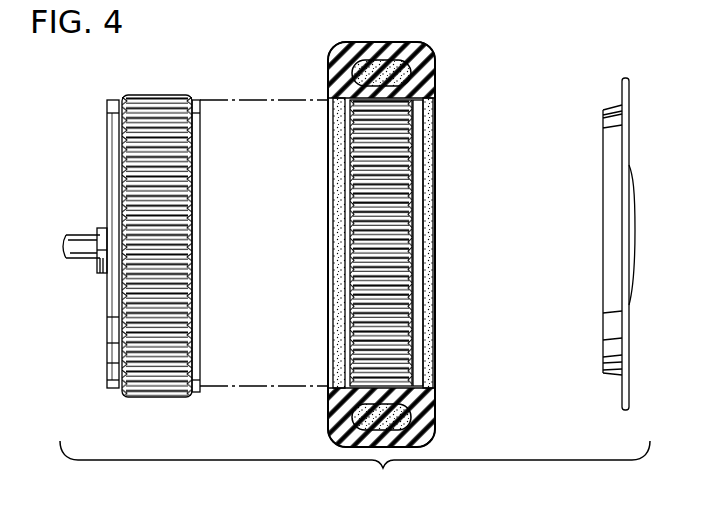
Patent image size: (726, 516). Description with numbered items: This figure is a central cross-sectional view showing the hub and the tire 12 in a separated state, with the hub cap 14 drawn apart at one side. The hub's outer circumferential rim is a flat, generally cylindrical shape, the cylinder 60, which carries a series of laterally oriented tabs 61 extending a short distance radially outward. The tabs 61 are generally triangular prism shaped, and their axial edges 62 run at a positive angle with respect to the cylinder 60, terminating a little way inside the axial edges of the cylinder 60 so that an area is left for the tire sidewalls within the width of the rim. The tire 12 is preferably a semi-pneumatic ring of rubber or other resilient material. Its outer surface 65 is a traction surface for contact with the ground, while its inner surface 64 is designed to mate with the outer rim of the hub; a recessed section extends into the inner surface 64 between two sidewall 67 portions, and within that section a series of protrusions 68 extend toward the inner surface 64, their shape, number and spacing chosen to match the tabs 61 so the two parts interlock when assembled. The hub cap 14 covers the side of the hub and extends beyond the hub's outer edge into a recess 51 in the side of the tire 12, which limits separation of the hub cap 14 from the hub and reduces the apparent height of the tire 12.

The tire 12 is at (388, 231).
The hub cap 14 is at (630, 357).
The recess 51 is at (430, 98).
The cylinder 60 is at (113, 100).
The tabs 61 is at (150, 95).
The axial edges 62 is at (192, 99).
The inner surface 64 is at (418, 103).
The outer surface 65 is at (375, 52).
The sidewall 67 is at (340, 102).
The protrusions 68 is at (390, 100).